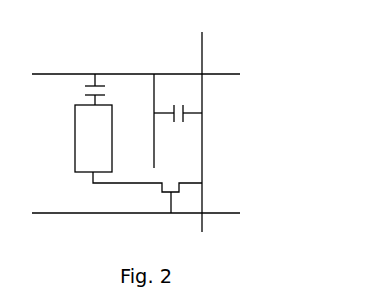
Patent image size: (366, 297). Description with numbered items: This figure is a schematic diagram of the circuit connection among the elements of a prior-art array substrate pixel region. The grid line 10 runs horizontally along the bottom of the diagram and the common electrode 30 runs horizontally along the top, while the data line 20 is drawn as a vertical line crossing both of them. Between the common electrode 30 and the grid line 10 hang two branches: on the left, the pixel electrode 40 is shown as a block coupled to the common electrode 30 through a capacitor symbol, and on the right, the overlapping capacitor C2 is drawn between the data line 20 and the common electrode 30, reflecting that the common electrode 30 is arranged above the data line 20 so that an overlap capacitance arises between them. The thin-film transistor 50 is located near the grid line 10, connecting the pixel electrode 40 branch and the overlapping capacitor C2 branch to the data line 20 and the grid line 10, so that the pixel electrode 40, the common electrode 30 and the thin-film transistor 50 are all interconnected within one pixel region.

The grid line 10 is at (147, 213).
The data line 20 is at (203, 121).
The common electrode 30 is at (147, 73).
The pixel electrode 40 is at (93, 123).
The thin-film transistor 50 is at (147, 202).
The overlapping capacitor C2 is at (178, 121).